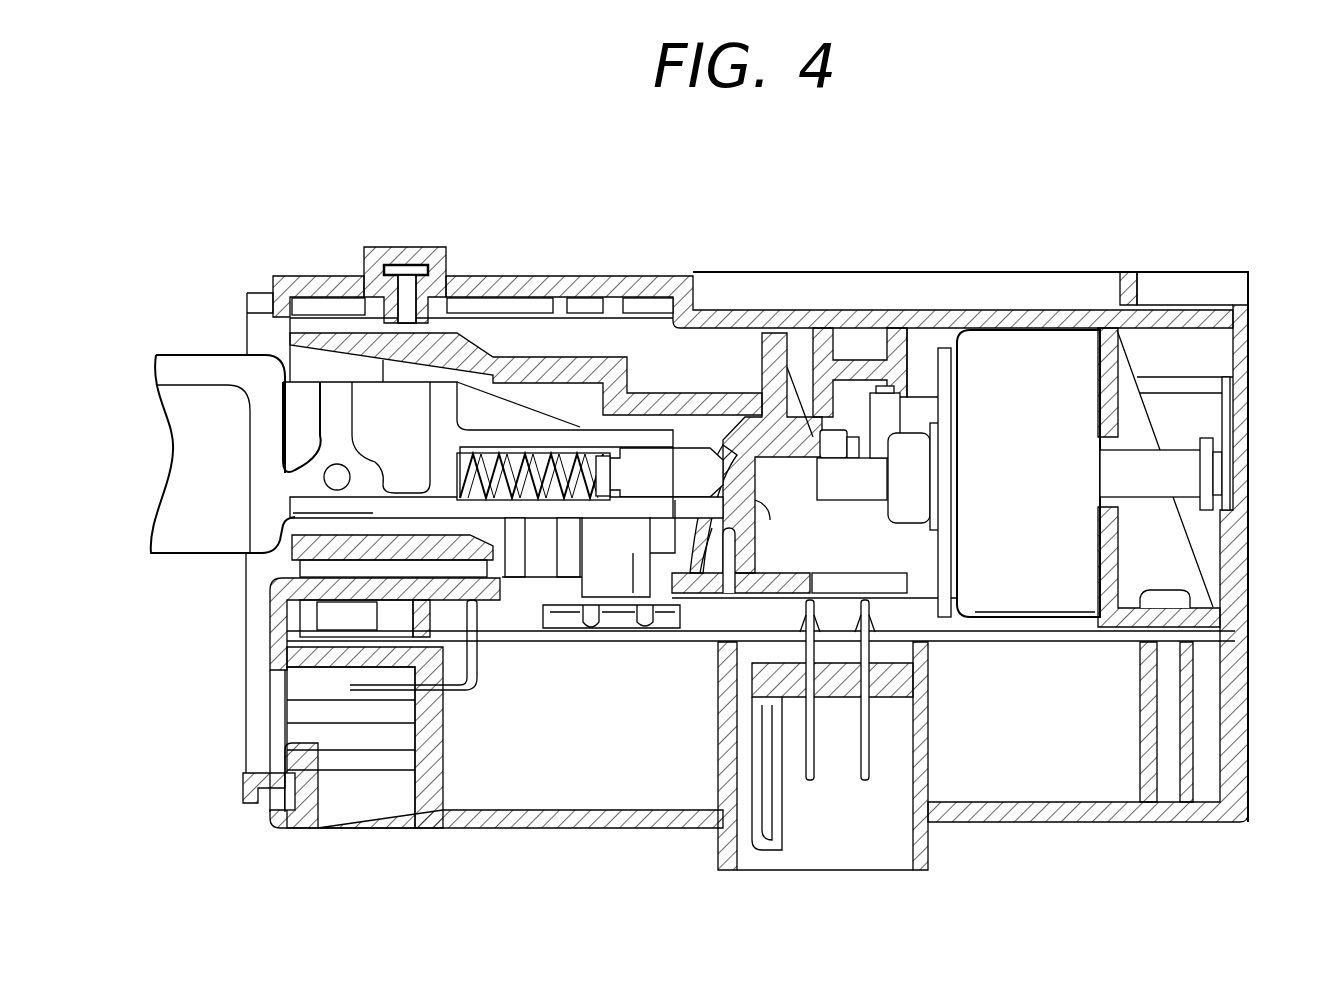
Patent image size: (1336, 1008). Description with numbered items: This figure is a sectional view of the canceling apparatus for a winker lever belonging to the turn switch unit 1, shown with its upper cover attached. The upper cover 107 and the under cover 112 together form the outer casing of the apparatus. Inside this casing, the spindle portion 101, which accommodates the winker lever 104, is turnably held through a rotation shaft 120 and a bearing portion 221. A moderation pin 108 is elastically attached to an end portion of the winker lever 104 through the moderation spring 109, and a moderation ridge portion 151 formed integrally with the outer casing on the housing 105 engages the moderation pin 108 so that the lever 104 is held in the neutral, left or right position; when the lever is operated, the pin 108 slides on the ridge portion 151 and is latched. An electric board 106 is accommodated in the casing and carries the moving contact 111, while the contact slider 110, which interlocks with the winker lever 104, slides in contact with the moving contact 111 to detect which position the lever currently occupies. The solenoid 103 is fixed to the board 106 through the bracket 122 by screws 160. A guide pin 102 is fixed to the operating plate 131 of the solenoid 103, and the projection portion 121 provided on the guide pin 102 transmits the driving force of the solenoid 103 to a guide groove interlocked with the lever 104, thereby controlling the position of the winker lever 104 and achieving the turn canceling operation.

The turn switch unit 1 is at (1237, 256).
The spindle portion 101 is at (490, 340).
The guide pin 102 is at (867, 473).
The solenoid 103 is at (1030, 345).
The winker lever 104 is at (220, 358).
The housing 105 is at (742, 460).
The board 106 is at (1060, 645).
The upper cover 107 is at (328, 280).
The moderation pin 108 is at (690, 468).
The moderation spring 109 is at (590, 455).
The contact slider 110 is at (615, 582).
The moving contact 111 is at (585, 632).
The under cover 112 is at (460, 832).
The rotation shaft 120 is at (372, 282).
The projection portion 121 is at (834, 436).
The bracket 122 is at (1133, 370).
The operating plate 131 is at (947, 610).
The moderation ridge portion 151 is at (757, 527).
The screws 160 is at (1168, 590).
The bearing portion 221 is at (429, 253).